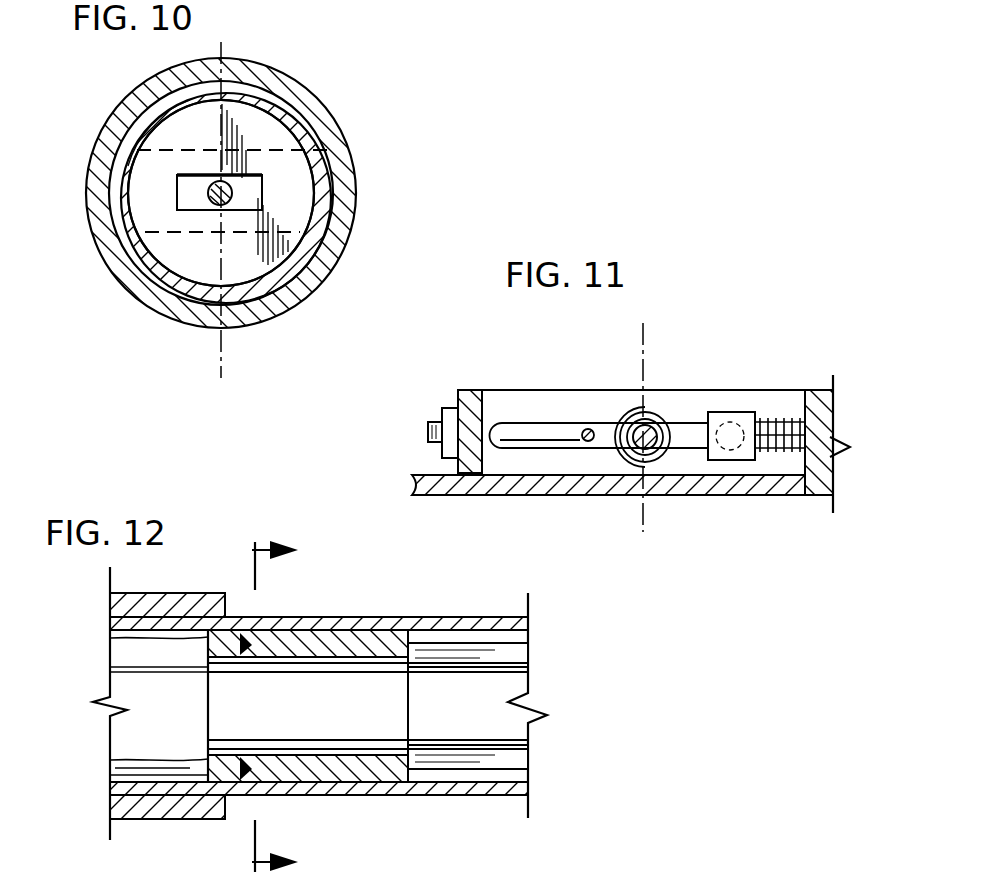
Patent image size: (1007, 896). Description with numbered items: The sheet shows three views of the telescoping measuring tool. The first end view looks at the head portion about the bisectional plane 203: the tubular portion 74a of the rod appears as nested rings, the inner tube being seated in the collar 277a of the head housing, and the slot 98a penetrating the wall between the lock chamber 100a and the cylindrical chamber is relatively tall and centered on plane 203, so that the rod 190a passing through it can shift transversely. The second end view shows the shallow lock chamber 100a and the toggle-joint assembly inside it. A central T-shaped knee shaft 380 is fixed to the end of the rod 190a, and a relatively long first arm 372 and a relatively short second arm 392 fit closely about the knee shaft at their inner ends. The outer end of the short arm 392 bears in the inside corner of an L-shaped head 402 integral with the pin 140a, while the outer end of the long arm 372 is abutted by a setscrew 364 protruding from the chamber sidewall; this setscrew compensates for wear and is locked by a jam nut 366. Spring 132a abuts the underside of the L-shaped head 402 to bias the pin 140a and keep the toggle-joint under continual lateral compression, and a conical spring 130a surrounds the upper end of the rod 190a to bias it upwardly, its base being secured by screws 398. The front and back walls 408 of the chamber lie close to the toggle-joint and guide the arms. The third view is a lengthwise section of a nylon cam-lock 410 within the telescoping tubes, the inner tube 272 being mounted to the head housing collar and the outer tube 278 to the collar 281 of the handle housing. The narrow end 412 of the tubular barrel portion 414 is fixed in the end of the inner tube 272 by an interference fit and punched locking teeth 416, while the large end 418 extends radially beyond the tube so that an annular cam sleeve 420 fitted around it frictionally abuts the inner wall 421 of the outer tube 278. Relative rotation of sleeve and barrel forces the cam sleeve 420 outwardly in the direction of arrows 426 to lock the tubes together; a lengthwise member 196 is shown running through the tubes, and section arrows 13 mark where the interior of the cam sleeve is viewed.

In FIG. 10, the outer tube 74a is at (287, 110).
In FIG. 10, the eccentric bushing 277a is at (323, 130).
In FIG. 10, the lock chamber 100a is at (338, 128).
In FIG. 11, the lock chamber 100a is at (580, 408).
In FIG. 10, the slot 98a is at (250, 203).
In FIG. 10, the rod 190a is at (217, 197).
In FIG. 10, the bisectional plane 203 is at (218, 347).
In FIG. 11, the bisectional plane 203 is at (647, 338).
In FIG. 11, the jam nut 366 is at (442, 411).
In FIG. 11, the setscrew 364 is at (428, 436).
In FIG. 11, the screws 398 is at (577, 428).
In FIG. 11, the first arm 372 is at (527, 422).
In FIG. 11, the knee shaft 380 is at (647, 422).
In FIG. 11, the spring 130a is at (667, 420).
In FIG. 11, the second arm 392 is at (695, 432).
In FIG. 11, the L-shaped head 402 is at (743, 412).
In FIG. 11, the spring 132a is at (772, 412).
In FIG. 11, the pin 140a is at (790, 420).
In FIG. 11, the front and back walls 408 is at (552, 485).
In FIG. 12, the section line 13- 13 is at (292, 706).
In FIG. 12, the outer tube 278 is at (428, 617).
In FIG. 12, the collar 281 is at (167, 819).
In FIG. 12, the cam sleeve 420 is at (272, 638).
In FIG. 12, the tubular barrel portion 414 is at (313, 757).
In FIG. 12, the arrows 426 is at (253, 655).
In FIG. 12, the inner tube 272 is at (492, 645).
In FIG. 12, the narrow end 412 is at (408, 760).
In FIG. 12, the rod 196 is at (490, 677).
In FIG. 12, the punched locking teeth 416 is at (378, 748).
In FIG. 12, the cam-lock 410 is at (165, 756).
In FIG. 12, the inner wall 421 is at (120, 638).
In FIG. 12, the large end 418 is at (205, 643).